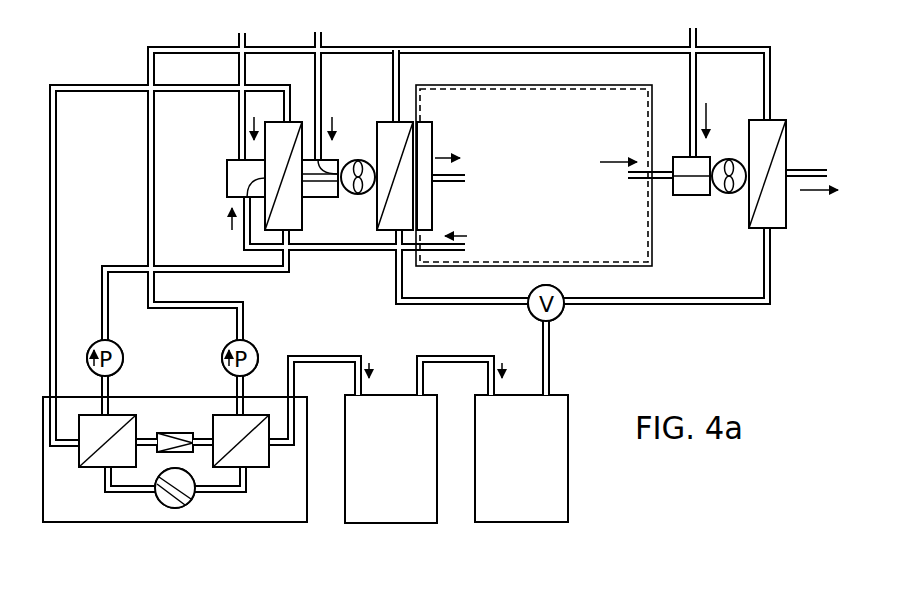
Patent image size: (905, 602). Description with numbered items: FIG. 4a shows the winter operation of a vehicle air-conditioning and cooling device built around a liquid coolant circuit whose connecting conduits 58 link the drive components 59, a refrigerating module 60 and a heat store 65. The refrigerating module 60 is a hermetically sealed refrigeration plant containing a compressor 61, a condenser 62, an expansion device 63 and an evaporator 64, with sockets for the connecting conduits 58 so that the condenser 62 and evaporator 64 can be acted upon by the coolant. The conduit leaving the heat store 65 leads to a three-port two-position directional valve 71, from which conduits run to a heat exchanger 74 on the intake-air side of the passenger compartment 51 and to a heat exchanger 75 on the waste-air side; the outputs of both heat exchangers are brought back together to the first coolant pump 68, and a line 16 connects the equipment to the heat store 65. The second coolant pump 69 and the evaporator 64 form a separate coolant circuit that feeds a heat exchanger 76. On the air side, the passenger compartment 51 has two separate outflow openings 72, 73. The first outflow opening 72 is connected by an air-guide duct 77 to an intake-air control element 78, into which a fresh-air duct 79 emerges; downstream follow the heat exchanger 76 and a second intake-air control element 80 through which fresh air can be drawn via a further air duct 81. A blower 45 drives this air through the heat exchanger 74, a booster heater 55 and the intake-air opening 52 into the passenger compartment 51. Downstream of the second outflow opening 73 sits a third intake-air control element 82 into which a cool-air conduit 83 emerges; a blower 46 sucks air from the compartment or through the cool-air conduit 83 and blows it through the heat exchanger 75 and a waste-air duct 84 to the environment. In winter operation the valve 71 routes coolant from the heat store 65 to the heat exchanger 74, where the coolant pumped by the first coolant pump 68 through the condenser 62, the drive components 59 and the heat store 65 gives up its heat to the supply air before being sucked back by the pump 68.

The connecting line 16 is at (410, 350).
The blower 45 is at (358, 160).
The blower 46 is at (738, 193).
The passenger compartment 51 is at (530, 152).
The intake-air opening 52 is at (460, 184).
The booster heater 55 is at (424, 128).
The connecting conduits 58 is at (470, 48).
The drive components 59 is at (402, 463).
The refrigerating module 60 is at (216, 528).
The compressor 61 is at (173, 507).
The condenser 62 is at (252, 470).
The expansion device 63 is at (161, 433).
The evaporator 64 is at (97, 469).
The heat store 65 is at (535, 463).
The first coolant pump 68 is at (256, 352).
The second coolant pump 69 is at (122, 348).
The 3/2-way valve 71 is at (563, 320).
The first outflow opening 72 is at (467, 245).
The second outflow opening 73 is at (634, 181).
The heat exchanger 74 is at (387, 127).
The heat exchanger 75 is at (776, 118).
The heat exchanger 76 is at (301, 217).
The air-guide duct 77 is at (368, 253).
The intake-air control element 78 is at (227, 172).
The fresh-air duct 79 is at (237, 112).
The second intake-air control element 80 is at (335, 196).
The further air duct 81 is at (313, 98).
The third intake-air control element 82 is at (690, 193).
The cool-air conduit 83 is at (698, 90).
The waste-air duct 84 is at (808, 167).